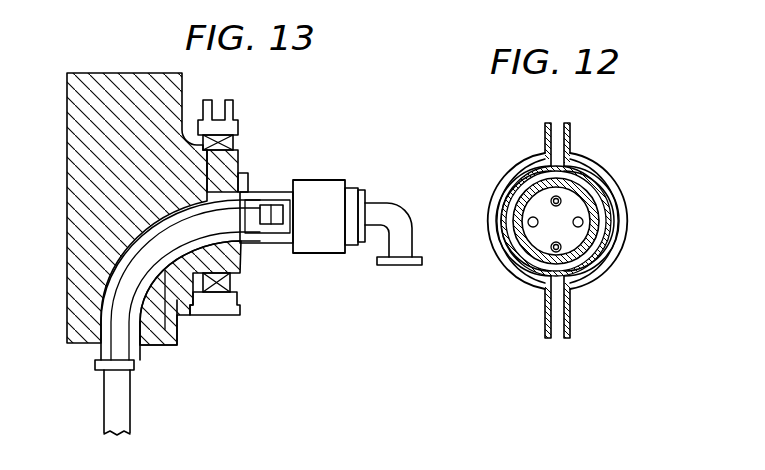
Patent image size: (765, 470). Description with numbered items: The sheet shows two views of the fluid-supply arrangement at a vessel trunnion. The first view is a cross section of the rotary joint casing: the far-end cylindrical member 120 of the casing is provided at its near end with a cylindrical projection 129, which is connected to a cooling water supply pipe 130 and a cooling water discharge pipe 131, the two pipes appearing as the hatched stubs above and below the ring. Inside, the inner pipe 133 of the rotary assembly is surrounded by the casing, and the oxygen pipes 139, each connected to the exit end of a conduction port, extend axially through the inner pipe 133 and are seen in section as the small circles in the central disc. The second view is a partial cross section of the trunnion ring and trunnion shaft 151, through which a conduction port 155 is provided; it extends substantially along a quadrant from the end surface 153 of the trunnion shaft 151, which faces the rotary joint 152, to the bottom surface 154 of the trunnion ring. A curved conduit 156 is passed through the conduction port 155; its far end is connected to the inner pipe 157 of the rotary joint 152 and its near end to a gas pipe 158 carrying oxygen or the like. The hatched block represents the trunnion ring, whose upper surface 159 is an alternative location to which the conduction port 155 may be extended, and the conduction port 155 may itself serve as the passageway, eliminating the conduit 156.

In FIG. 13, the upper surface 159 is at (143, 78).
In FIG. 13, the trunnion shaft 151 is at (238, 133).
In FIG. 13, the end surface 153 is at (243, 163).
In FIG. 13, the rotary joint 152 is at (321, 187).
In FIG. 13, the inner pipe 157 is at (273, 225).
In FIG. 13, the curved conduit 156 is at (110, 343).
In FIG. 13, the conduction port 155 is at (180, 330).
In FIG. 13, the bottom surface 154 is at (162, 340).
In FIG. 13, the gas pipe 158 is at (120, 417).
In FIG. 12, the cylindrical member 120 is at (610, 176).
In FIG. 12, the cooling water discharge pipe 131 is at (572, 138).
In FIG. 12, the cooling water supply pipe 130 is at (571, 318).
In FIG. 12, the inner pipe 133 is at (590, 262).
In FIG. 12, the cylindrical projection 129 is at (612, 210).
In FIG. 12, the oxygen pipe 139 is at (582, 223).